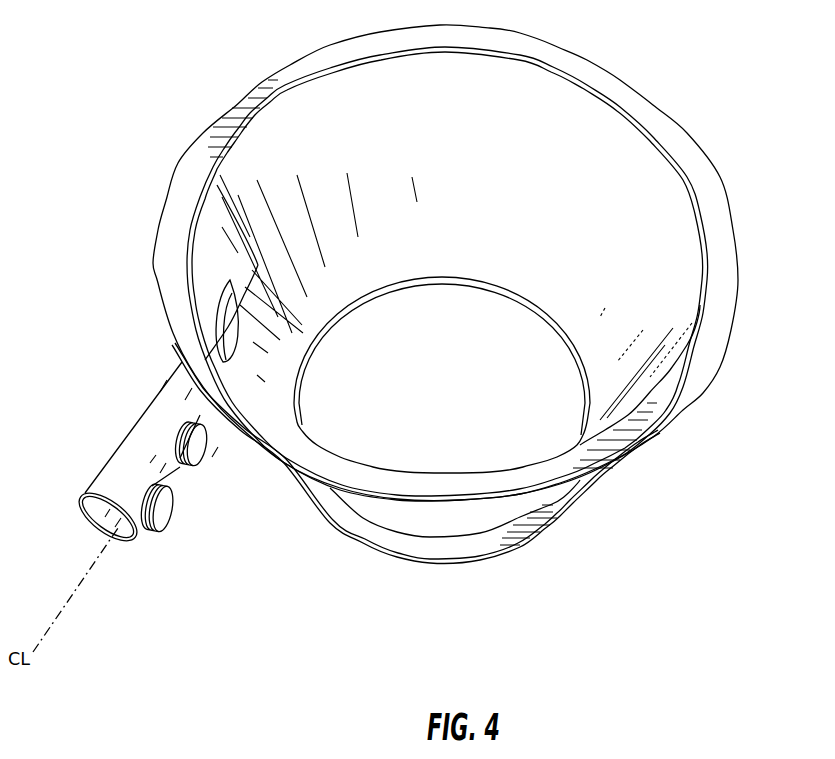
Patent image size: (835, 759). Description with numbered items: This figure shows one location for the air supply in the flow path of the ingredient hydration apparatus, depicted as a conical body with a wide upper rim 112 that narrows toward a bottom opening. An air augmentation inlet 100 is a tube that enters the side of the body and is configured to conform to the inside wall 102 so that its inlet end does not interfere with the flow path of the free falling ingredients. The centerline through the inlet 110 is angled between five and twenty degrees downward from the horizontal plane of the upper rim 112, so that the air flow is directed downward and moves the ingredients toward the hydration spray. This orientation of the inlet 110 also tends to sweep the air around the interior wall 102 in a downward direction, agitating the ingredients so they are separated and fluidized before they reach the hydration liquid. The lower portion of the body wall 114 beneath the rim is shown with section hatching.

The air augmentation inlet 100 is at (618, 213).
The inside wall 102 is at (620, 327).
The air augmentation inlet 110 is at (145, 445).
The upper rim 112 is at (663, 408).
The lower wall 114 is at (541, 534).